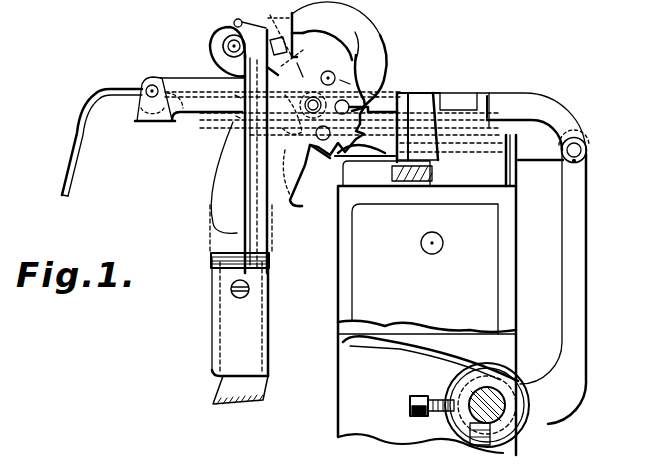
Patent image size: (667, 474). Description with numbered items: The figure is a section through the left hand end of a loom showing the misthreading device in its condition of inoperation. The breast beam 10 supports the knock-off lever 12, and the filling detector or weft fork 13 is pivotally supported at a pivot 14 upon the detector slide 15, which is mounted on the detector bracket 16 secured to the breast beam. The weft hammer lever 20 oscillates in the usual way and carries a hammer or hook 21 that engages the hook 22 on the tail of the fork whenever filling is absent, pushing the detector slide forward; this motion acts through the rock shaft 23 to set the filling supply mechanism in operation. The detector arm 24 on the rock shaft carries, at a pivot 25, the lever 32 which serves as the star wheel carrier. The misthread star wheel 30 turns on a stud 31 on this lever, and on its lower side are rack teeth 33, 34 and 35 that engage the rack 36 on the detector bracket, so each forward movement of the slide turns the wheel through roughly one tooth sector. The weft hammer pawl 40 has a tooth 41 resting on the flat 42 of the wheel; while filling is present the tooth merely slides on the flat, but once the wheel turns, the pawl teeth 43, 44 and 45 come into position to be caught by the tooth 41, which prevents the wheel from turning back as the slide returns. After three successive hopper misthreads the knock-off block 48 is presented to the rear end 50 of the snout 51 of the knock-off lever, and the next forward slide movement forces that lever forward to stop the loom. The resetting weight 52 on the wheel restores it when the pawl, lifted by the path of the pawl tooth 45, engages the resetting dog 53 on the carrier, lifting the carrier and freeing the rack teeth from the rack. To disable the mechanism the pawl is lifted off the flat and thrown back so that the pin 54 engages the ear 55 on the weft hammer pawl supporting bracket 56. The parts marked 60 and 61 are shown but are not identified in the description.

The breast beam 10 is at (480, 330).
The knock-off lever 12 is at (428, 165).
The weft fork 13 is at (66, 158).
The pivot 14 is at (153, 86).
The detector slide 15 is at (202, 103).
The detector bracket 16 is at (498, 143).
The weft hammer lever 20 is at (226, 392).
The weft hammer 21 is at (237, 118).
The hook 22 is at (284, 100).
The rock shaft 23 is at (490, 408).
The detector arm 24 is at (578, 273).
The pivot 25 is at (585, 150).
The misthread star wheel 30 is at (345, 82).
The stud 31 is at (374, 95).
The lever 32 is at (473, 87).
The rack tooth 33 is at (310, 175).
The rack tooth 34 is at (365, 130).
The rack tooth 35 is at (382, 105).
The rack 36 is at (332, 178).
The weft hammer pawl 40 is at (268, 28).
The tooth 41 is at (301, 51).
The flat 42 is at (331, 64).
The pawl tooth 43 is at (232, 34).
The pawl tooth 44 is at (237, 96).
The pawl tooth 45 is at (250, 125).
The knock-off block 48 is at (370, 34).
The rear end 50 is at (308, 123).
The snout 51 is at (434, 93).
The resetting weight 52 is at (299, 197).
The resetting dog 53 is at (339, 56).
The pin 54 is at (233, 23).
The ear 55 is at (216, 42).
The weft hammer pawl supporting bracket 56 is at (238, 229).
The block 60 is at (417, 126).
The link 61 is at (300, 90).